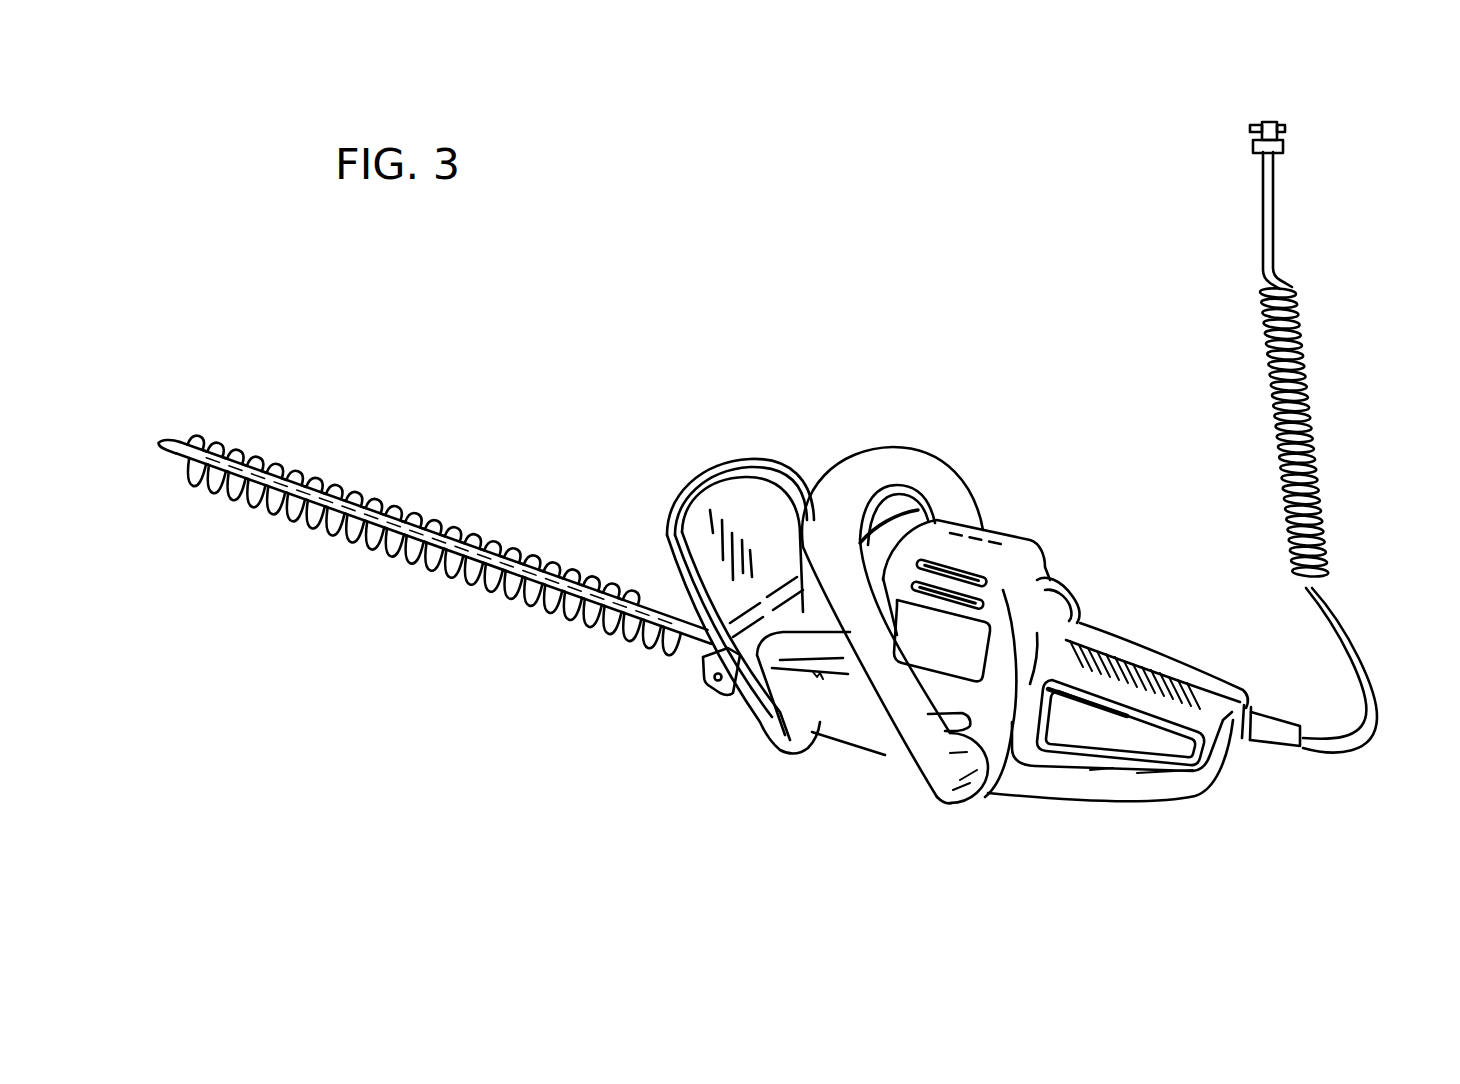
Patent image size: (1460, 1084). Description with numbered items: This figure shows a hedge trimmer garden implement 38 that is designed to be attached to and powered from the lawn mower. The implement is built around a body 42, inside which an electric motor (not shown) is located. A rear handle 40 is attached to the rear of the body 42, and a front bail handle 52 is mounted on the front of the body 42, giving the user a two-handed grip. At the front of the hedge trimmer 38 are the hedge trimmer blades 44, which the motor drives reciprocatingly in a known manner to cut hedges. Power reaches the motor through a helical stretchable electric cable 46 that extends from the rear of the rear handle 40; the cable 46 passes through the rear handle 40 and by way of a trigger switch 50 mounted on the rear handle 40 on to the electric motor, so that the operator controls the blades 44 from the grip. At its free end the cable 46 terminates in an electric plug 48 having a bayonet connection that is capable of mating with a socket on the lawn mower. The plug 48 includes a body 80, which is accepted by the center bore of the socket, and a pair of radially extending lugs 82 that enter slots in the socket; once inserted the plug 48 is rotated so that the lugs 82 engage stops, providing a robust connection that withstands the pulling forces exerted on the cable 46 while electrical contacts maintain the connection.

The hedge trimmer garden implement 38 is at (924, 286).
The rear handle 40 is at (1128, 666).
The body 42 is at (975, 550).
The hedge trimmer blades 44 is at (417, 514).
The helical stretchable electric cable 46 is at (1277, 240).
The electric plug 48 is at (1268, 124).
The trigger switch 50 is at (1063, 691).
The front bail handle 52 is at (878, 463).
The body 80 is at (1262, 131).
The lugs 82 is at (1285, 128).